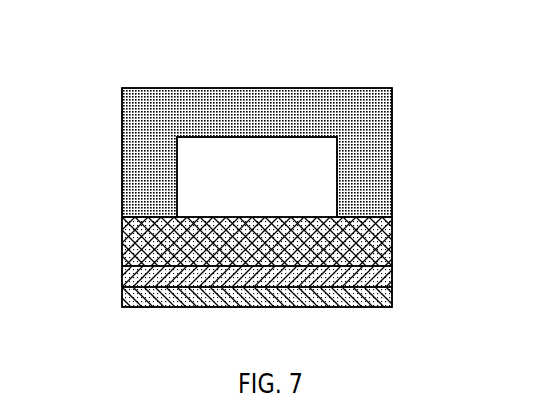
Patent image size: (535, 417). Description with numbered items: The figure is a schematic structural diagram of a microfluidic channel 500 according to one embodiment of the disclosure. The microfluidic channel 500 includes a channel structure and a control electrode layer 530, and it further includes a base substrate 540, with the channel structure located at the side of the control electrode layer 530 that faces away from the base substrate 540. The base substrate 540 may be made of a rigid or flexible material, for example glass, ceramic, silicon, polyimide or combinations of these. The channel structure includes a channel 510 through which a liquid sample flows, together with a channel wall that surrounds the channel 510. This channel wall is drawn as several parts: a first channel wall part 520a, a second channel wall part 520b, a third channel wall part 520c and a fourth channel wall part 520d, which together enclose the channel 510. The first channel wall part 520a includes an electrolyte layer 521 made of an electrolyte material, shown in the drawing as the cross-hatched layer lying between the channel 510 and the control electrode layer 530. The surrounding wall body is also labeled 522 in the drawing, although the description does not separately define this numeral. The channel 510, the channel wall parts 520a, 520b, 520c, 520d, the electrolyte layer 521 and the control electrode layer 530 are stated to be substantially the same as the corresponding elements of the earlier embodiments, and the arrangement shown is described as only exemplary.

The microfluidic channel 500 is at (107, 78).
The channel 510 is at (315, 191).
The first channel wall part 520a is at (333, 240).
The second channel wall part 520b is at (392, 195).
The third channel wall part 520c is at (317, 108).
The fourth channel wall part 520d is at (153, 177).
The electrolyte layer 521 is at (393, 244).
The housing body 522 is at (393, 105).
The control electrode layer 530 is at (393, 270).
The base substrate 540 is at (393, 297).